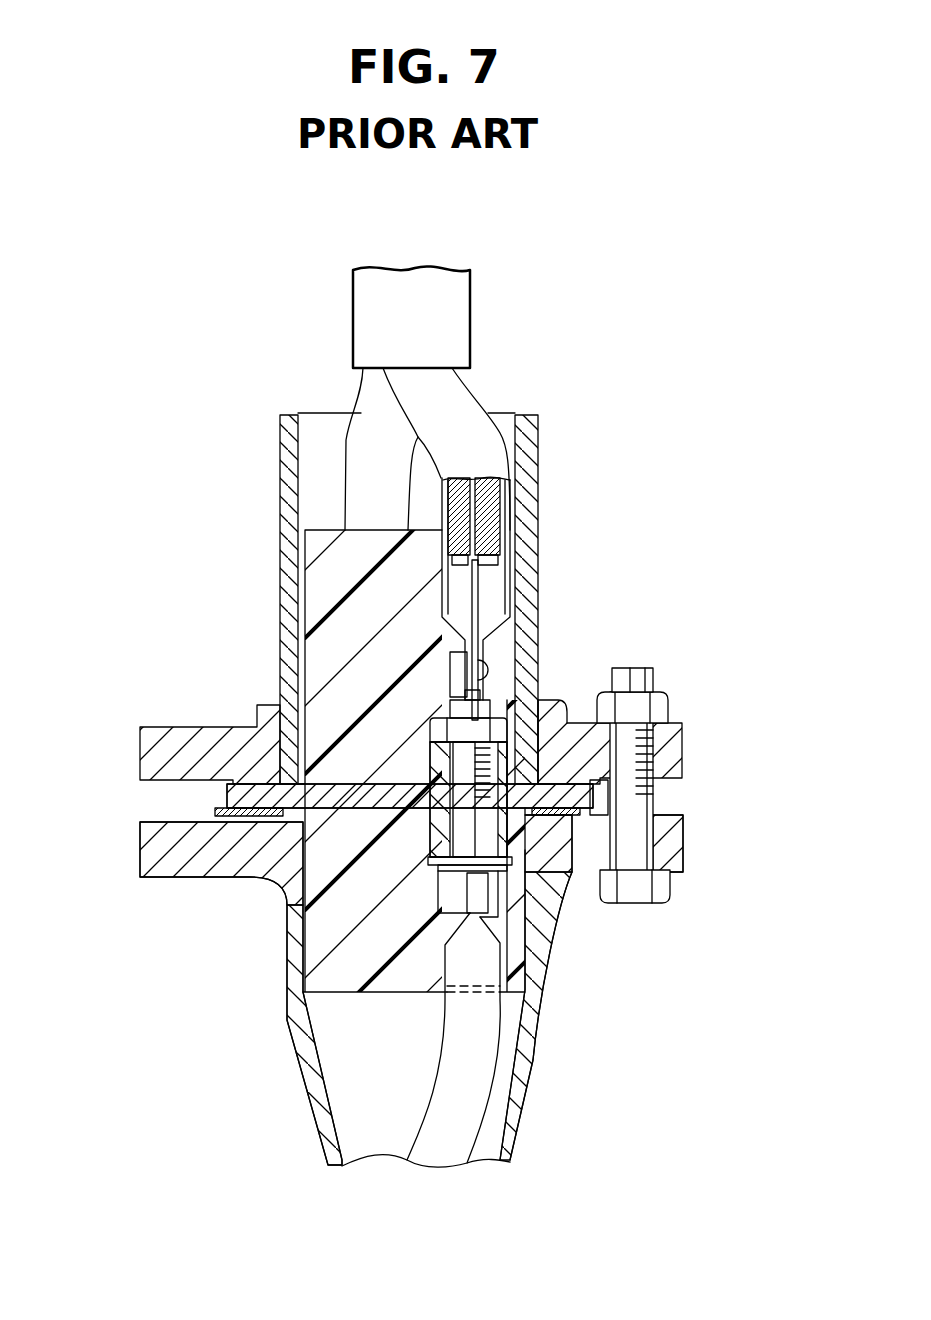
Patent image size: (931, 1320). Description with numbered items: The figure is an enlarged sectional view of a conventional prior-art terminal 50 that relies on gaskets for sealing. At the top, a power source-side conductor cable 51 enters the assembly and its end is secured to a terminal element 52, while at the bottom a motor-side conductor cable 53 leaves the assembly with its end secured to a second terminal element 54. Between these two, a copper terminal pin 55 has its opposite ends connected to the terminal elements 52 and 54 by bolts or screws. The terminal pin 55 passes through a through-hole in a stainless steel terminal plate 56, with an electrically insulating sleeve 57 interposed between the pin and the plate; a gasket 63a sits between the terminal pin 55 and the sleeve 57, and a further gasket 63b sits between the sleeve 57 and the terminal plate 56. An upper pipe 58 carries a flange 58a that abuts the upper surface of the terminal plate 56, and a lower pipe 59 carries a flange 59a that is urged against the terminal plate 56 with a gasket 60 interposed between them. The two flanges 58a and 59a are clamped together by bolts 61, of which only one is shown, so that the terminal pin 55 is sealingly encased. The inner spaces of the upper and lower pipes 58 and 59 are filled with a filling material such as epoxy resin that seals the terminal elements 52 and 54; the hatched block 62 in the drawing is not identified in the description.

The terminal 50 is at (557, 657).
The power source-side conductor cable 51 is at (455, 407).
The terminal element 52 is at (488, 592).
The motor-side conductor cable 53 is at (450, 1133).
The terminal element 54 is at (470, 957).
The terminal pin 55 is at (465, 832).
The terminal plate 56 is at (263, 800).
The electrically insulating sleeve 57 is at (443, 850).
The upper pipe 58 is at (537, 482).
The flange 58a is at (690, 732).
The lower pipe 59 is at (515, 1088).
The flange 59a is at (670, 878).
The gasket 60 is at (225, 810).
The bolt 61 is at (655, 803).
The insulating block 62 is at (353, 612).
The gasket 63a is at (540, 912).
The gasket 63b is at (557, 888).